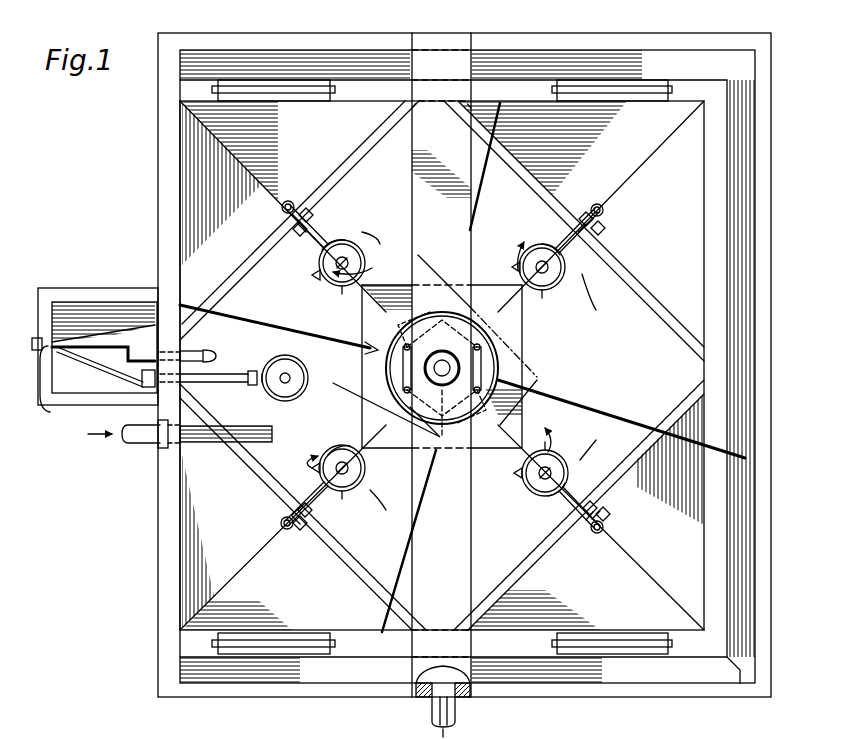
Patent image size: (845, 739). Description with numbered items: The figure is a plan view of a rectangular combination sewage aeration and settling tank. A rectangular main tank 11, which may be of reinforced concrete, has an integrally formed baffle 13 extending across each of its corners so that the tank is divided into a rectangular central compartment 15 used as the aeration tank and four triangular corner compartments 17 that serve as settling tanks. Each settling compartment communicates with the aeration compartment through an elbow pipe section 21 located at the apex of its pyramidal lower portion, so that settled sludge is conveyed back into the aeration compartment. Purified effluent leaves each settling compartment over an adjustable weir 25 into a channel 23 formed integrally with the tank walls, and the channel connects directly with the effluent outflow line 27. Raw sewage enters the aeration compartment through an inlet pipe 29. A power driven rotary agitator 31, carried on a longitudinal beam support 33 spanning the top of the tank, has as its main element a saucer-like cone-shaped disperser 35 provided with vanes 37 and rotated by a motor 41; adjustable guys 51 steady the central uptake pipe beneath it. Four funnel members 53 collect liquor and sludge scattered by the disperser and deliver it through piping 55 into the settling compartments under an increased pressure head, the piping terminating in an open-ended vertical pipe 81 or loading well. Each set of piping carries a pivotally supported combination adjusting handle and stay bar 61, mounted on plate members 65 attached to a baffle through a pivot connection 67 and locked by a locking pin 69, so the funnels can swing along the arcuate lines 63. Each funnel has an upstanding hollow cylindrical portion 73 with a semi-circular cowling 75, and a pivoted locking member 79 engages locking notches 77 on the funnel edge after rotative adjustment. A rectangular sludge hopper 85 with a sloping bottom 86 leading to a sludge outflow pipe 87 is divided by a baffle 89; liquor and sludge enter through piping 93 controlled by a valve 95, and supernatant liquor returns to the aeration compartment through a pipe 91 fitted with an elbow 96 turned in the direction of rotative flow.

The main tank 11 is at (158, 158).
The baffle 13 is at (335, 160).
The central compartment 15 is at (442, 365).
The corner compartments 17 is at (442, 365).
The elbow pipe section 21 is at (322, 220).
The channel 23 is at (585, 58).
The adjustable weir 25 is at (290, 92).
The effluent outflow line 27 is at (456, 715).
The inlet pipe 29 is at (135, 444).
The rotary agitator 31 is at (402, 334).
The longitudinal beam support 33 is at (425, 208).
The disperser 35 is at (375, 377).
The vanes 37 is at (403, 388).
The motor 41 is at (446, 352).
The adjustable guys 51 is at (484, 182).
The funnel members 53 is at (360, 255).
The piping 55 is at (322, 236).
The combination adjusting handle and stay bar 61 is at (305, 207).
The lines 63 is at (485, 365).
The plate members 65 is at (292, 225).
The pivot connection 67 is at (303, 236).
The locking pin 69 is at (294, 230).
The upstanding hollow cylindrical portion 73 is at (548, 452).
The cowling 75 is at (363, 252).
The locking notches 77 is at (335, 282).
The pivoted locking member 79 is at (262, 386).
The vertical pipe 81 is at (288, 201).
The sludge hopper 85 is at (92, 295).
The sloping bottom 86 is at (120, 330).
The sludge outflow pipe 87 is at (51, 384).
The baffle 89 is at (130, 346).
The pipe 91 is at (200, 350).
The piping 93 is at (235, 377).
The valve 95 is at (135, 384).
The elbow 96 is at (216, 352).